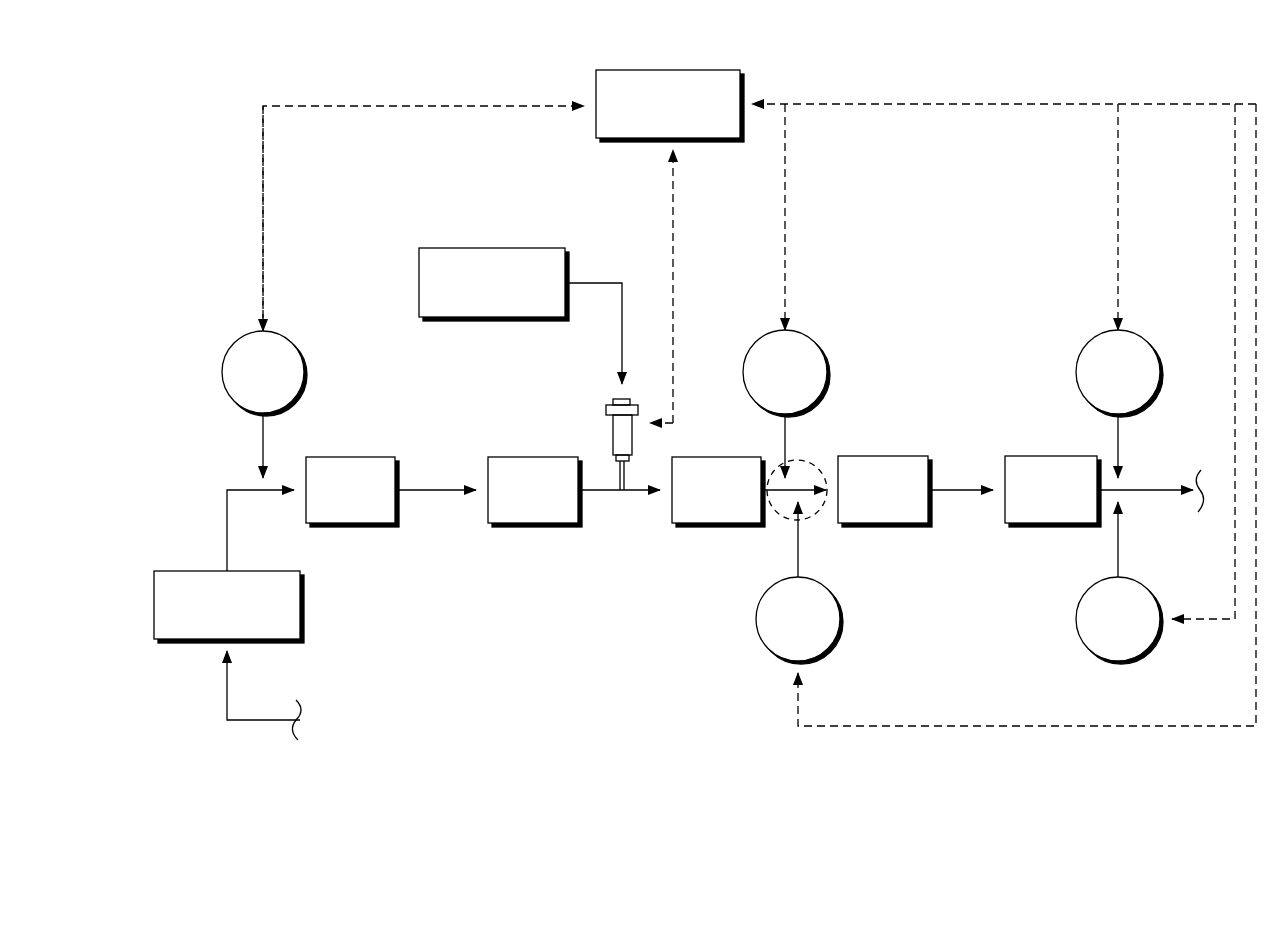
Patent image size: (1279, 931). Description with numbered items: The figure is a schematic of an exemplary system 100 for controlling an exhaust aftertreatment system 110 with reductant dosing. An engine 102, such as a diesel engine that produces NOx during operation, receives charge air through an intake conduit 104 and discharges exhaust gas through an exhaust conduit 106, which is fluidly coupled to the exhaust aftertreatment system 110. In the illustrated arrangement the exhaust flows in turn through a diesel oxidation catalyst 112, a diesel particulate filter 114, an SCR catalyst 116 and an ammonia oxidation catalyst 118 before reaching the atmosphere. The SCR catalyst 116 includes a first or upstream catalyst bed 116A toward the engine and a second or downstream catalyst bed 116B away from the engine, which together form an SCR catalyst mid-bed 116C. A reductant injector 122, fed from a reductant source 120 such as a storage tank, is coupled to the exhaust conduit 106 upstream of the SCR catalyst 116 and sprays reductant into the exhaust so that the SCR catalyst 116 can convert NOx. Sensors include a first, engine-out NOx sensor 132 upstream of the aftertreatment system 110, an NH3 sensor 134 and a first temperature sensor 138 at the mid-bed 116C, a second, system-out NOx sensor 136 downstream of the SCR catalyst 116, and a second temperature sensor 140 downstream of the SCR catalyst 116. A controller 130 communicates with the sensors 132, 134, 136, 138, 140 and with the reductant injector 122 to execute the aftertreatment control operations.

The system 100 is at (322, 58).
The engine 102 is at (193, 571).
The intake conduit 104 is at (258, 724).
The exhaust conduit 106 is at (263, 492).
The exhaust aftertreatment system 110 is at (864, 303).
The diesel oxidation catalyst 112 is at (358, 457).
The diesel particulate filter 114 is at (505, 457).
The SCR catalyst 116 is at (840, 568).
The first catalyst bed 116A is at (672, 510).
The second catalyst bed 116B is at (878, 456).
The SCR catalyst mid-bed 116C is at (806, 520).
The ammonia oxidation catalyst 118 is at (1040, 456).
The reductant source 120 is at (419, 290).
The reductant injector 122 is at (613, 425).
The controller 130 is at (596, 88).
The first NOx sensor 132 is at (222, 372).
The NH3 sensor 134 is at (762, 340).
The second NOx sensor 136 is at (1098, 340).
The first temperature sensor 138 is at (757, 619).
The second temperature sensor 140 is at (1077, 619).